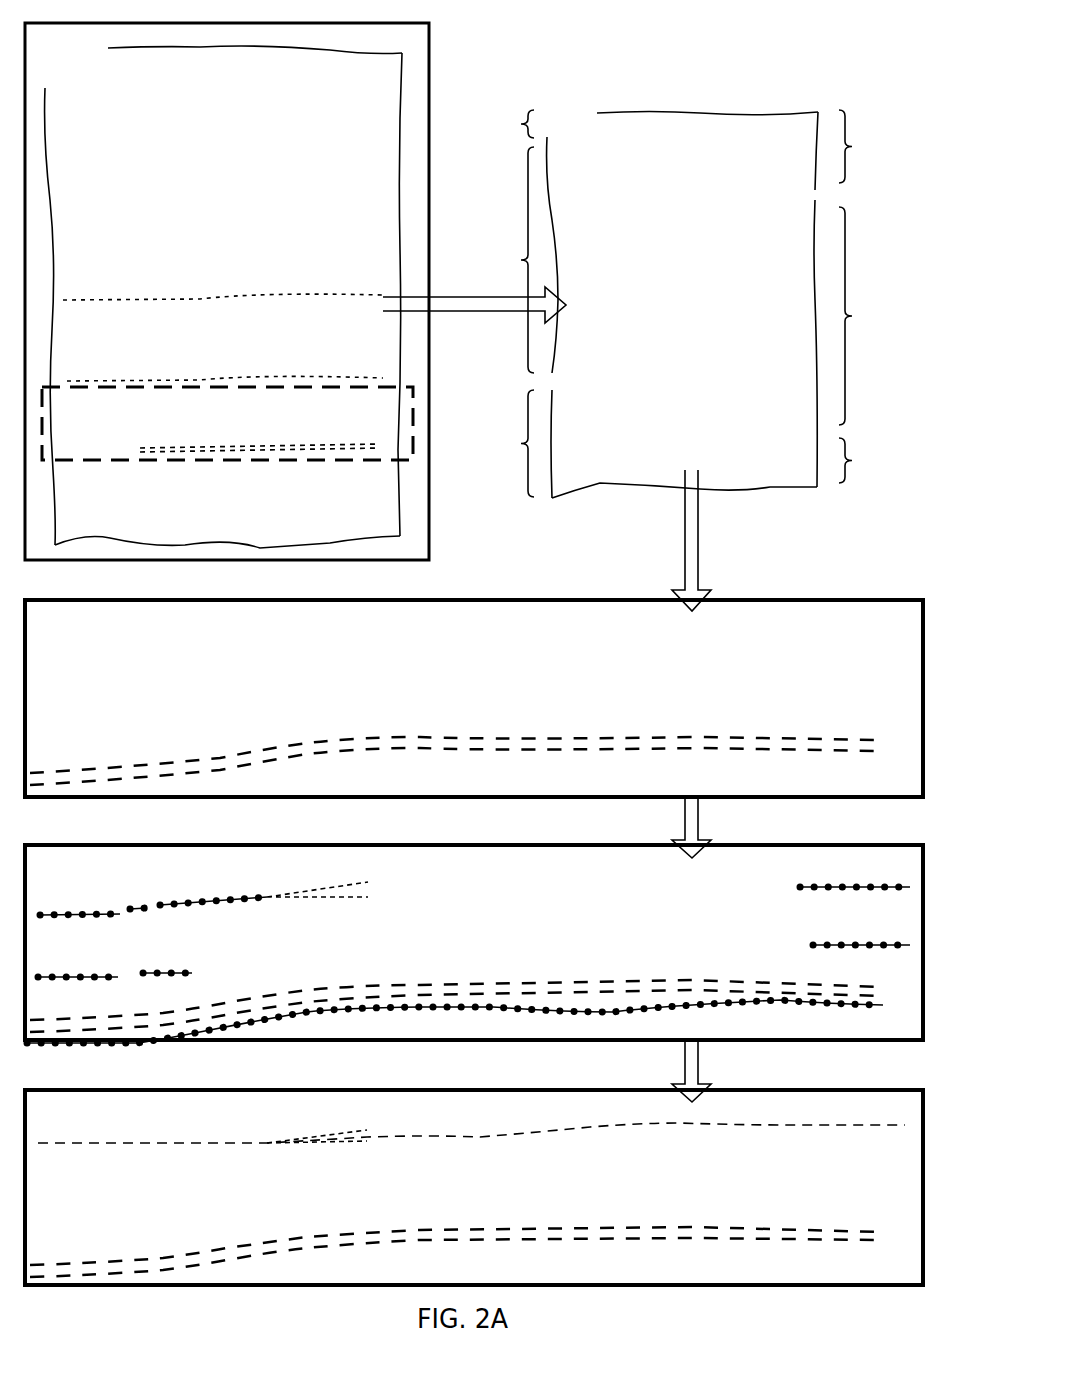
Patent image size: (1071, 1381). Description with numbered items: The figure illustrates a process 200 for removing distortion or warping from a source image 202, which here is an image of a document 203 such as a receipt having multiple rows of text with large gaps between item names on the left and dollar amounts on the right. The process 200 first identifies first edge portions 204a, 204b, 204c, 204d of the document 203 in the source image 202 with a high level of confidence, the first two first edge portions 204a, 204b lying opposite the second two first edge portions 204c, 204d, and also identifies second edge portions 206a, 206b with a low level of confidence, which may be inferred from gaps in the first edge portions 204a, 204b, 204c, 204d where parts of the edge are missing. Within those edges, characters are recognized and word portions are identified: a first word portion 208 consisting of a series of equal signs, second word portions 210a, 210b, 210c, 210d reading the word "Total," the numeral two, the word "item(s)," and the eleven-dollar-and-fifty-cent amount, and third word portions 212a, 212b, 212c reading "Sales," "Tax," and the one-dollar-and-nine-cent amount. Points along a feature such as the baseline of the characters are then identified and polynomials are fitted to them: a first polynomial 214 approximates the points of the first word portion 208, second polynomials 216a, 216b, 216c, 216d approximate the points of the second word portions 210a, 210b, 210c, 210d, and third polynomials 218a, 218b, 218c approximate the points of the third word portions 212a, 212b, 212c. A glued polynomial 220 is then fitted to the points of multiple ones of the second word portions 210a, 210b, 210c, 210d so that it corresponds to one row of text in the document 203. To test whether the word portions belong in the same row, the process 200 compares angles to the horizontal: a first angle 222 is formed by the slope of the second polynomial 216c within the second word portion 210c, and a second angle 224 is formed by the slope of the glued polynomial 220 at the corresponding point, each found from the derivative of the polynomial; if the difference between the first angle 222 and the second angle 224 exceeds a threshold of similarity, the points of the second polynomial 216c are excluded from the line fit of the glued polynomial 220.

The process 200 is at (816, 52).
The source image 202 is at (430, 530).
The document 203 is at (415, 470).
The first edge portion 204a is at (515, 255).
The first edge portion 204b is at (512, 444).
The first edge portion 204c is at (860, 150).
The first edge portion 204d is at (862, 343).
The second edge portion 206a is at (645, 124).
The second edge portion 206b is at (731, 468).
The first word portion 208 is at (411, 775).
The second word portion 210a is at (77, 612).
The second word portion 210b is at (148, 612).
The second word portion 210c is at (232, 612).
The second word portion 210d is at (858, 610).
The third word portion 212a is at (113, 700).
The third word portion 212b is at (205, 706).
The third word portion 212c is at (805, 686).
The first polynomial 214 is at (412, 1010).
The second polynomial 216a is at (68, 917).
The second polynomial 216b is at (135, 911).
The second polynomial 216c is at (236, 904).
The second polynomial 216d is at (800, 889).
The third polynomial 218a is at (70, 980).
The third polynomial 218b is at (148, 977).
The third polynomial 218c is at (818, 950).
The glued polynomial 220 is at (590, 1130).
The first angle 222 is at (376, 889).
The second angle 224 is at (372, 1133).